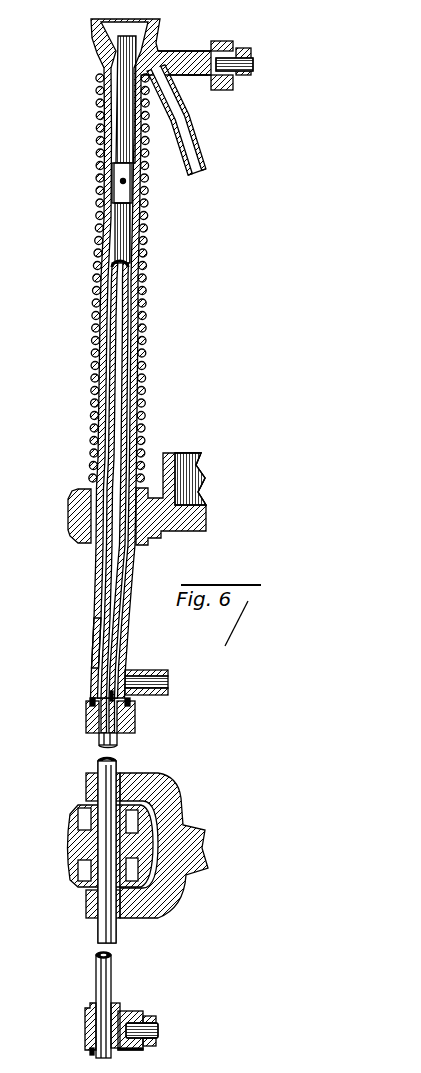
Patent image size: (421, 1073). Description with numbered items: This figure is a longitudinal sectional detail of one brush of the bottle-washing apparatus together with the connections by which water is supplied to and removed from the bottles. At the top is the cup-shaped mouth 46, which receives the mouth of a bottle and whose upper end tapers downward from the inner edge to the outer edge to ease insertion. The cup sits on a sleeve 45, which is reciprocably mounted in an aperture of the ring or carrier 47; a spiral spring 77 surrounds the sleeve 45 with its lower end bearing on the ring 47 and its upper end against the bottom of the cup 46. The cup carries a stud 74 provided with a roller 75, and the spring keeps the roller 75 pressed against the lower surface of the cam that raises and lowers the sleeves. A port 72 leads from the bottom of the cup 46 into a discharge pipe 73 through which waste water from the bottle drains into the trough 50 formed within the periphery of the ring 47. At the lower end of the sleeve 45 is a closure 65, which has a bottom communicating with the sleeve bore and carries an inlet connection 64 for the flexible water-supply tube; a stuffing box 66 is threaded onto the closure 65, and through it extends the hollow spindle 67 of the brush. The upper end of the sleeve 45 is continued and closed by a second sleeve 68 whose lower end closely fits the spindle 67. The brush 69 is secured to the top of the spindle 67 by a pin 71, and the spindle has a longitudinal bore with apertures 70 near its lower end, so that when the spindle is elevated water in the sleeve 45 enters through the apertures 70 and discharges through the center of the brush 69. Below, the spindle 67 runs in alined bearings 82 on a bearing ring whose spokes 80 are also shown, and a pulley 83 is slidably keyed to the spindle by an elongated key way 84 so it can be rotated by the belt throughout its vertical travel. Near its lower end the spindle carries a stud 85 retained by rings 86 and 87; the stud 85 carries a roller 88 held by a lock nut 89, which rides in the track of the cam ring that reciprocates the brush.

The sleeve 45 is at (130, 563).
The cup-shaped mouth 46 is at (85, 31).
The ring or carrier 47 is at (60, 512).
The trough 50 is at (185, 488).
The inlet connection 64 is at (160, 673).
The closure 65 is at (83, 673).
The stuffing box 66 is at (128, 713).
The hollow spindle 67 is at (124, 243).
The second sleeve 68 is at (125, 198).
The brush 69 is at (112, 127).
The apertures 70 is at (82, 695).
The pin 71 is at (113, 175).
The port 72 is at (147, 60).
The discharge pipe 73 is at (190, 119).
The stud 74 is at (180, 67).
The roller 75 is at (223, 33).
The spiral spring 77 is at (87, 342).
The spokes 80 is at (187, 863).
The alined bearings 82 is at (78, 897).
The pulleys 83 is at (60, 842).
The key way 84 is at (97, 787).
The stud 85 is at (150, 1021).
The ring 86 is at (82, 1044).
The ring 87 is at (82, 998).
The roller 88 is at (123, 1042).
The lock nut 89 is at (148, 1034).